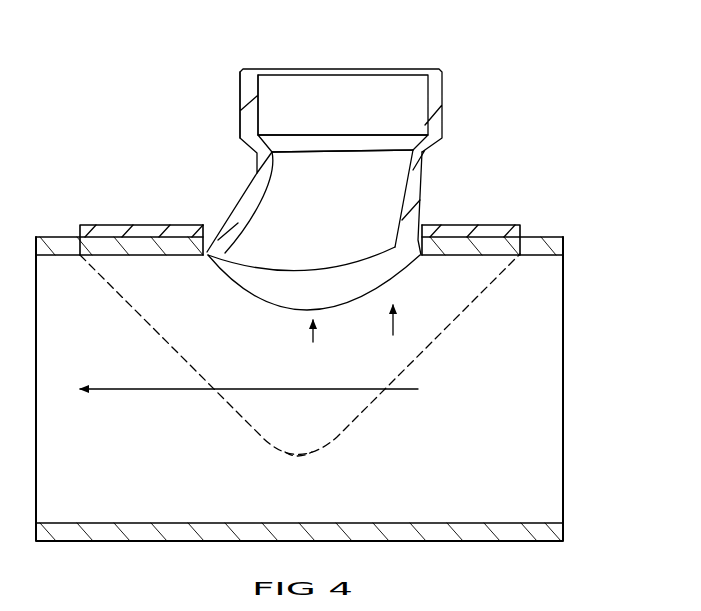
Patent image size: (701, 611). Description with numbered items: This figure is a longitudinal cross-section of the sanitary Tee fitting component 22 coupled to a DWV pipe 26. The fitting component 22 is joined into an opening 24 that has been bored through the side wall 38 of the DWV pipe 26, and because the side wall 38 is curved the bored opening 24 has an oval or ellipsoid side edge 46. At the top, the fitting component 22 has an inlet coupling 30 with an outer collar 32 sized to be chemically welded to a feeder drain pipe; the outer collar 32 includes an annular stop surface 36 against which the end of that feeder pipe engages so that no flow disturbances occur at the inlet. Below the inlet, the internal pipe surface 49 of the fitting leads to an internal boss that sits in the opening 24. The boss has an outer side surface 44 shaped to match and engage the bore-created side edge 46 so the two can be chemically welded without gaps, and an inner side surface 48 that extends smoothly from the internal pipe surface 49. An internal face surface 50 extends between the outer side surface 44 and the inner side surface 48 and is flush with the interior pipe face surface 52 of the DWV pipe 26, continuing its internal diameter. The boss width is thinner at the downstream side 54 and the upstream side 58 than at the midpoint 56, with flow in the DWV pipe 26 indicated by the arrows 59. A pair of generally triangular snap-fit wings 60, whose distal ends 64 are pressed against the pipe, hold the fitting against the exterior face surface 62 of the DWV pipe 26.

The sanitary Tee fitting component 22 is at (243, 166).
The opening 24 is at (208, 241).
The DWV pipe 26 is at (565, 388).
The inlet coupling 30 is at (403, 67).
The outer collar 32 is at (248, 100).
The annular stop surface 36 is at (380, 145).
The side wall 38 is at (552, 247).
The outer side surface 44 is at (203, 250).
The side edge 46 is at (403, 250).
The inner side surface 48 is at (245, 235).
The internal pipe surface 49 is at (270, 190).
The internal face surface 50 is at (222, 258).
The interior pipe face surface 52 is at (520, 325).
The downstream side 54 is at (209, 261).
The midpoint 56 is at (313, 342).
The upstream side 58 is at (393, 335).
The arrows 59 is at (148, 390).
The snap-fit wings 60 is at (402, 357).
The exterior face surface 62 is at (540, 232).
The distal ends 64 is at (298, 455).